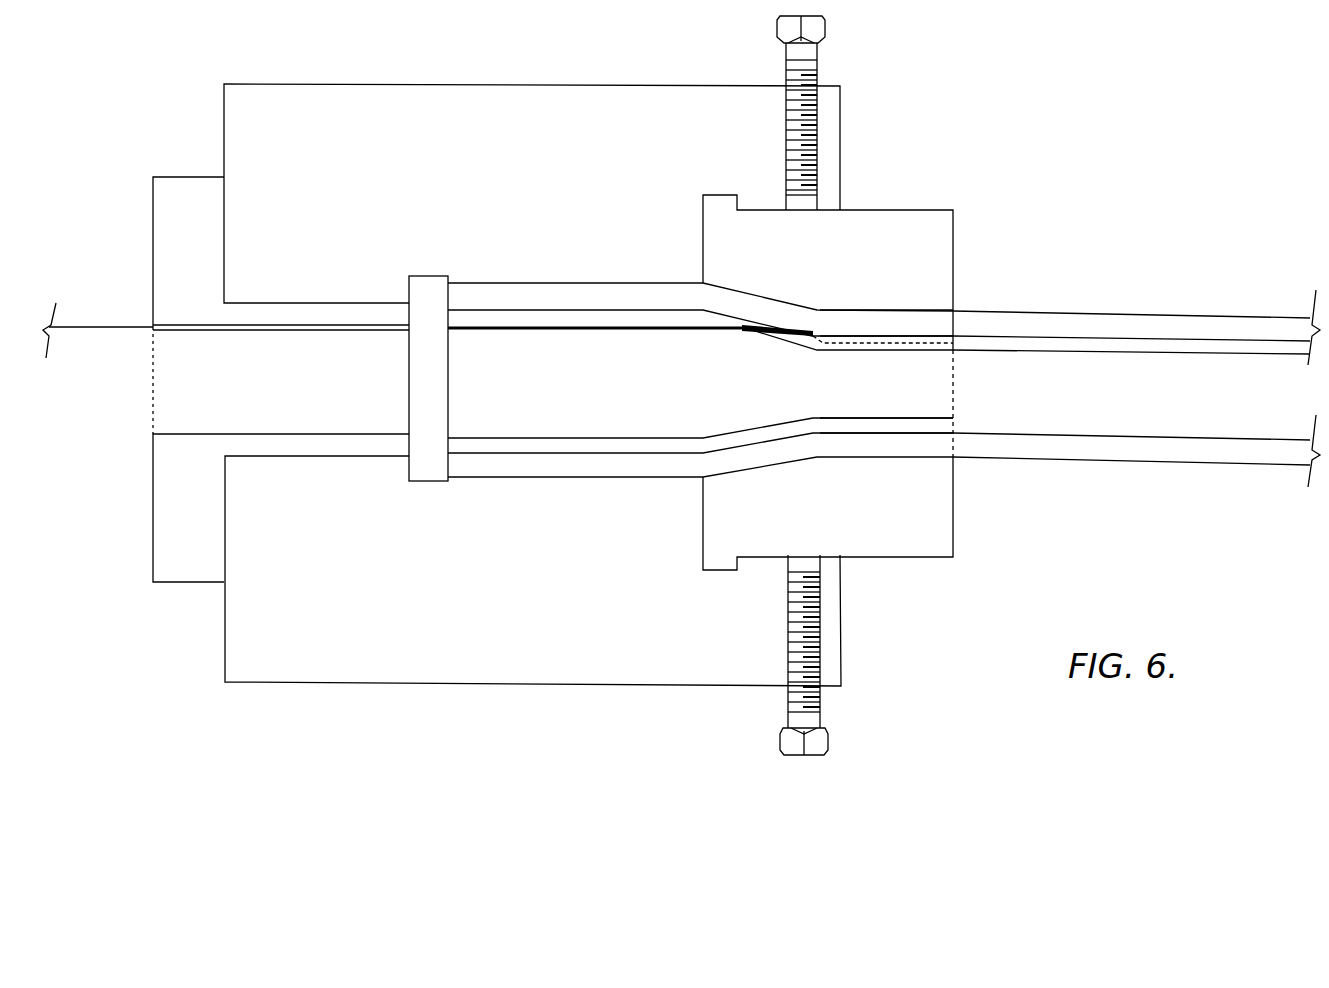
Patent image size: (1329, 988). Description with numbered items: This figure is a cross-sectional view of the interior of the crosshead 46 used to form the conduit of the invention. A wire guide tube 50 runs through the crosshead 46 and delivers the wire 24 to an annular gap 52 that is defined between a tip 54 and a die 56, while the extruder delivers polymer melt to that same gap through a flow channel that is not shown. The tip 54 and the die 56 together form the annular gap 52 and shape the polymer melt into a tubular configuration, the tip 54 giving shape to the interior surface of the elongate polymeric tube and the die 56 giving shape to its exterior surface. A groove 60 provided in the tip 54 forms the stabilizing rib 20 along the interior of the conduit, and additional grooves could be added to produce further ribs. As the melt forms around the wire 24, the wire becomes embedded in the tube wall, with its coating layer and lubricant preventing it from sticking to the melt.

The stabilizing rib 20 is at (1240, 353).
The wire 24 is at (148, 319).
The crosshead 46 is at (553, 385).
The wire guide tube 50 is at (581, 325).
The annular gap 52 is at (912, 323).
The tip 54 is at (883, 338).
The die 56 is at (850, 320).
The groove 60 is at (926, 343).